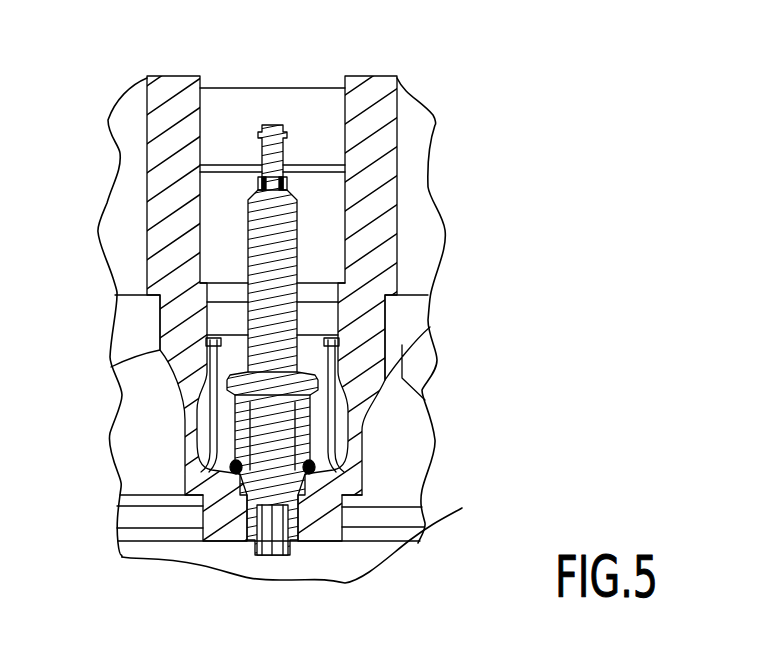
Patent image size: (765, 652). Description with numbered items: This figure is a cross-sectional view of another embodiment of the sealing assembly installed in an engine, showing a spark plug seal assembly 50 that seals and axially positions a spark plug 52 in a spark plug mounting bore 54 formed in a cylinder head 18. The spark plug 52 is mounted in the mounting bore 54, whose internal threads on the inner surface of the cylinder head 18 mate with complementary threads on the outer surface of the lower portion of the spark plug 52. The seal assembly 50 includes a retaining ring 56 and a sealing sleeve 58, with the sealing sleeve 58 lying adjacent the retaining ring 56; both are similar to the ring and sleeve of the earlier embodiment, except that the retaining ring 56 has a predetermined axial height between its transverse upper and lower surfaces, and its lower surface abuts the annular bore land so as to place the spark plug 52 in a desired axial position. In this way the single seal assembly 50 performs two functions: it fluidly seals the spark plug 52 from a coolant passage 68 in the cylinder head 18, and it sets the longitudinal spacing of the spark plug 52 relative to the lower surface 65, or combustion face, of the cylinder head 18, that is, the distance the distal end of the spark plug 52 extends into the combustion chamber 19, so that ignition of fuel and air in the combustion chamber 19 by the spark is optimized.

The cylinder head 18 is at (372, 193).
The combustion chamber 19 is at (318, 570).
The spark plug seal assembly 50 is at (349, 328).
The spark plug 52 is at (255, 207).
The spark plug mounting bore 54 is at (314, 132).
The retaining ring 56 is at (320, 479).
The sealing sleeve 58 is at (324, 347).
The lower surface 65 is at (313, 541).
The coolant passage 68 is at (202, 411).